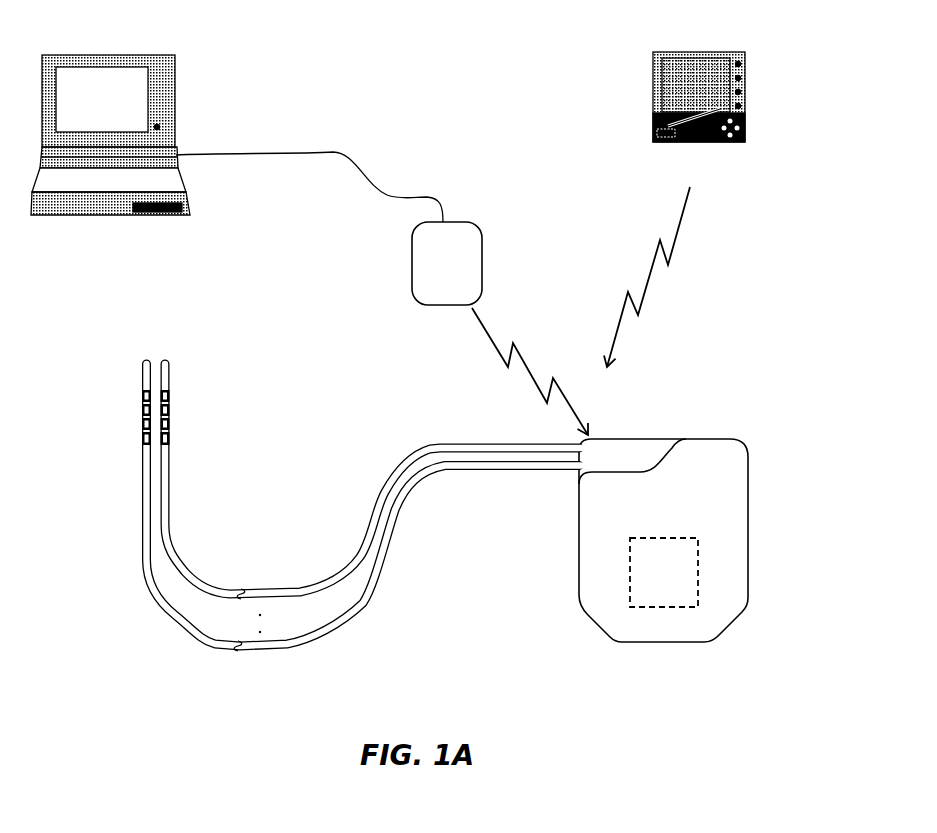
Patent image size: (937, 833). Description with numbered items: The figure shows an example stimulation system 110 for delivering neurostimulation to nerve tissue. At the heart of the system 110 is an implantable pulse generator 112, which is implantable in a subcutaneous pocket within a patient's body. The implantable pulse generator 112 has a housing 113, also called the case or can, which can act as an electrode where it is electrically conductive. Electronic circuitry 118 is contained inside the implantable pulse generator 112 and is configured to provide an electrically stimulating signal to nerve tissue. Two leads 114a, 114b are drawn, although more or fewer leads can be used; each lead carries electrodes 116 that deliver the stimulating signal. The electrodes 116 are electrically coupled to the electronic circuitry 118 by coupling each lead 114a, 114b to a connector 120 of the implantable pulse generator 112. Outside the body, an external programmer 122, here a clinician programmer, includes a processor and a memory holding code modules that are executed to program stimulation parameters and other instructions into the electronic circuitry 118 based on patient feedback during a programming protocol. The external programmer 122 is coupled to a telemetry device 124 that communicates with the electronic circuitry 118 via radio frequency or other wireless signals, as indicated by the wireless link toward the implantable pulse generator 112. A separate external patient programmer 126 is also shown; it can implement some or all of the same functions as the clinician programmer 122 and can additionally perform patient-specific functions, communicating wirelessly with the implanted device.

The stimulation system 110 is at (432, 488).
The implantable pulse generator 112 is at (665, 515).
The housing 113 is at (745, 553).
The lead 114a is at (172, 617).
The lead 114b is at (199, 573).
The electrode 116 is at (85, 420).
The electronic circuitry 118 is at (670, 537).
The connector 120 is at (578, 474).
The external programmer 122 is at (149, 53).
The telemetry device 124 is at (464, 219).
The external patient programmer 126 is at (724, 52).